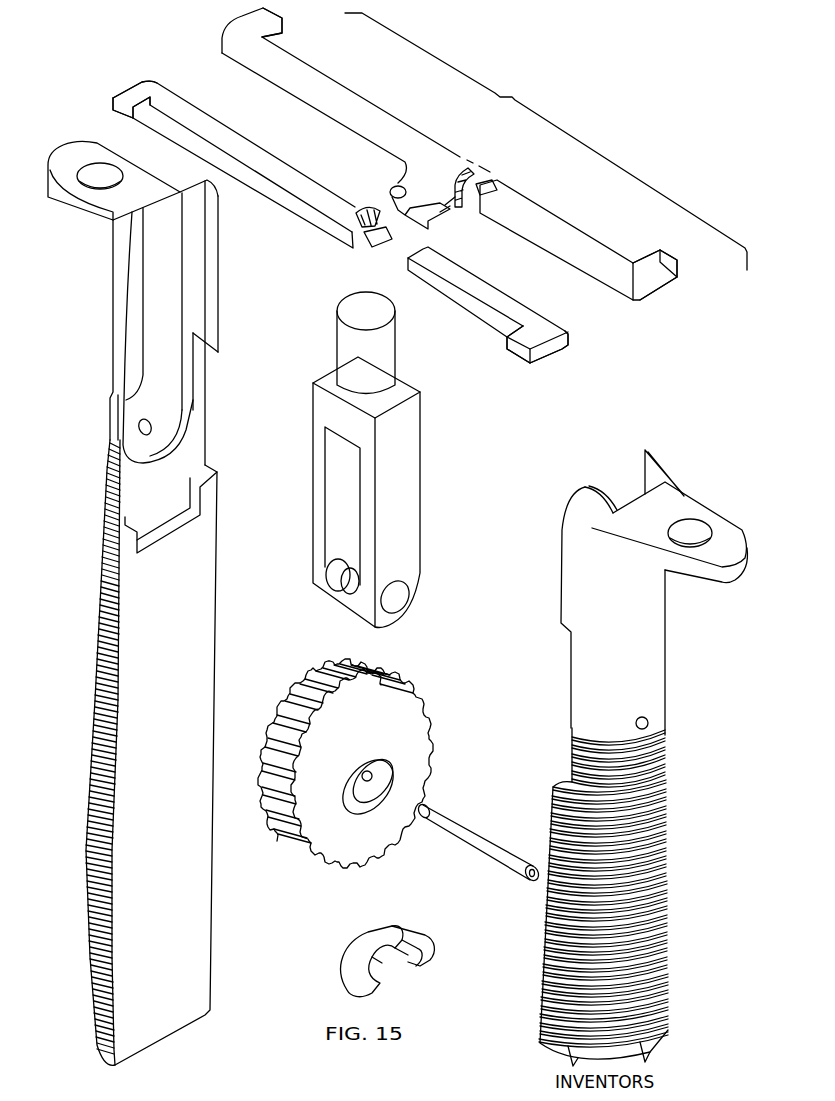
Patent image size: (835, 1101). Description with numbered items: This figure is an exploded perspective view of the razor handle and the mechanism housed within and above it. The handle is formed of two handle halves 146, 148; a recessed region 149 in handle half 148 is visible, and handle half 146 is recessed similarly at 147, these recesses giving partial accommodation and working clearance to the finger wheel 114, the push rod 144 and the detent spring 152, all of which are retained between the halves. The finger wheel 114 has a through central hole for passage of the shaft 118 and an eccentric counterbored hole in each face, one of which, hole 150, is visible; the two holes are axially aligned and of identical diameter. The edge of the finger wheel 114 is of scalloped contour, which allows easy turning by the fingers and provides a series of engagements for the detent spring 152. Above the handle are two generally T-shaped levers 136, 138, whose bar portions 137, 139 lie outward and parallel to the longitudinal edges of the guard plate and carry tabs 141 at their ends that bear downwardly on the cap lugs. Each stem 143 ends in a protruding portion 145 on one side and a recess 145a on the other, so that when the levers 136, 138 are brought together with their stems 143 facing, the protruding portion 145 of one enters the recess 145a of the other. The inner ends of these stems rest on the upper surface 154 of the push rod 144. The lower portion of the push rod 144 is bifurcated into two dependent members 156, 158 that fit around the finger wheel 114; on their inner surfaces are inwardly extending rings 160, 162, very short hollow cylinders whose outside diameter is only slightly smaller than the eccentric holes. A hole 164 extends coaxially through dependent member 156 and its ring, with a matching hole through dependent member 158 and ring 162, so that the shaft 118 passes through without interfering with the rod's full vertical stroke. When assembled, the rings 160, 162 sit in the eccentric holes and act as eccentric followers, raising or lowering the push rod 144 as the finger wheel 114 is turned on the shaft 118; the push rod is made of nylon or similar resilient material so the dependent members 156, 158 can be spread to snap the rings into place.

The finger wheel 114 is at (385, 766).
The shaft 118 is at (492, 864).
The lever 136 is at (545, 205).
The bar portion 137 is at (341, 118).
The lever 138 is at (298, 212).
The bar portion 139 is at (470, 278).
The tabs 141 is at (135, 96).
The stem 143 is at (372, 246).
The push rod 144 is at (385, 463).
The protruding portion 145 is at (438, 224).
The recess 145a is at (402, 165).
The handle half 146 is at (672, 815).
The recessed region 147 is at (568, 672).
The handle half 148 is at (134, 604).
The recessed region 149 is at (195, 442).
The eccentric counterbored hole 150 is at (355, 808).
The detent spring 152 is at (348, 983).
The upper surface 154 is at (337, 311).
The dependent member 156 is at (415, 497).
The dependent member 158 is at (312, 495).
The ring 160 is at (340, 600).
The ring 162 is at (325, 575).
The hole 164 is at (405, 592).